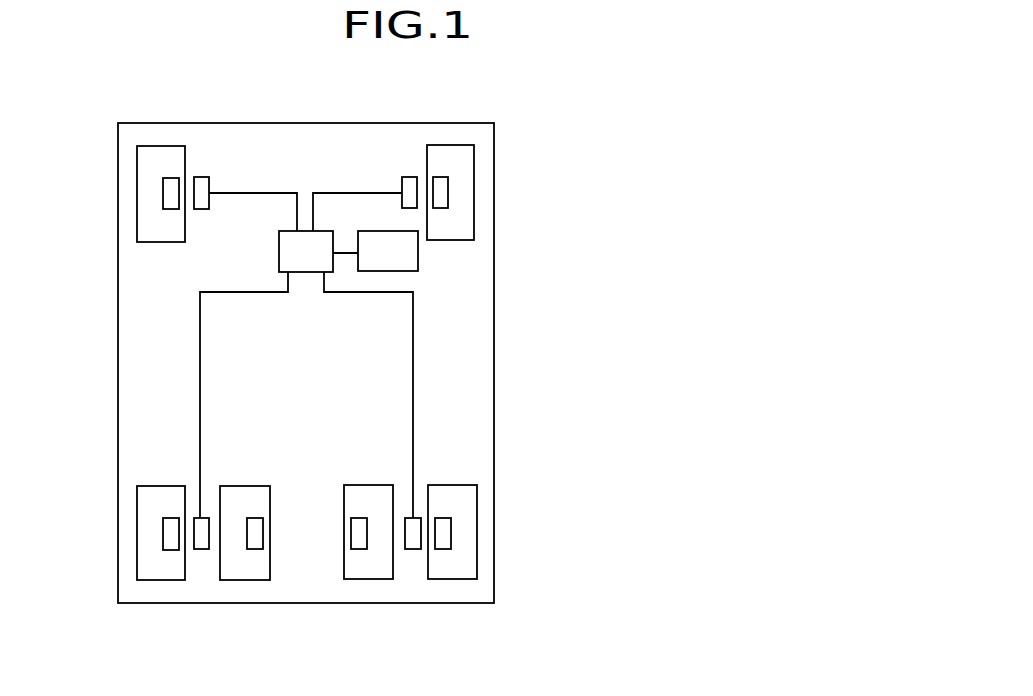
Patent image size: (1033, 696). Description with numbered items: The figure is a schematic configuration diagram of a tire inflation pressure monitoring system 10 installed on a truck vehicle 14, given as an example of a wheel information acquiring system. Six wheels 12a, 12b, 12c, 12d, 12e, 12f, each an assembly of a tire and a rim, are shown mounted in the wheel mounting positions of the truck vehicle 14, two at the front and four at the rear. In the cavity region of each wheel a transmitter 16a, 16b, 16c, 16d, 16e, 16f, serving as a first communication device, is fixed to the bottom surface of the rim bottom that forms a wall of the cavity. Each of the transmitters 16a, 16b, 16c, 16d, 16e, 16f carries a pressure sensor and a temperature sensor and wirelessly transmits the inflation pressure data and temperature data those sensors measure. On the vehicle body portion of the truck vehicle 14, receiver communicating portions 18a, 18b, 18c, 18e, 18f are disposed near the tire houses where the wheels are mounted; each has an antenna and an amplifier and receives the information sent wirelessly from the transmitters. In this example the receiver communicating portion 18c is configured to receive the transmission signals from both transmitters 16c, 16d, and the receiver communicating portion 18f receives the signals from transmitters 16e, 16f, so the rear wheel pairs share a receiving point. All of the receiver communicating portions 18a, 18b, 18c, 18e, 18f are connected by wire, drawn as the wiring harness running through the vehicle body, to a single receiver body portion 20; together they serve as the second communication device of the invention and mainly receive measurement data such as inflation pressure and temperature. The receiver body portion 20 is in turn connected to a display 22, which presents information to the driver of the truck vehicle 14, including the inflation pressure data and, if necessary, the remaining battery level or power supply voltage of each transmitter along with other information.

The tire inflation pressure monitoring system 10 is at (576, 142).
The wheel 12a is at (148, 143).
The wheel 12b is at (465, 143).
The wheel 12c is at (137, 503).
The wheel 12d is at (232, 581).
The wheel 12e is at (383, 580).
The wheel 12f is at (477, 502).
The truck vehicle 14 is at (495, 388).
The transmitter 16a is at (163, 195).
The transmitter 16b is at (448, 193).
The transmitter 16c is at (163, 535).
The transmitter 16d is at (255, 550).
The transmitter 16e is at (362, 550).
The transmitter 16f is at (451, 533).
The receiver communicating portion 18a is at (201, 176).
The receiver communicating portion 18b is at (410, 176).
The receiver communicating portion 18c is at (201, 550).
The receiver communicating portion 18e is at (413, 533).
The receiver communicating portion 18f is at (413, 550).
The receiver body portion 20 is at (279, 255).
The display 22 is at (418, 257).